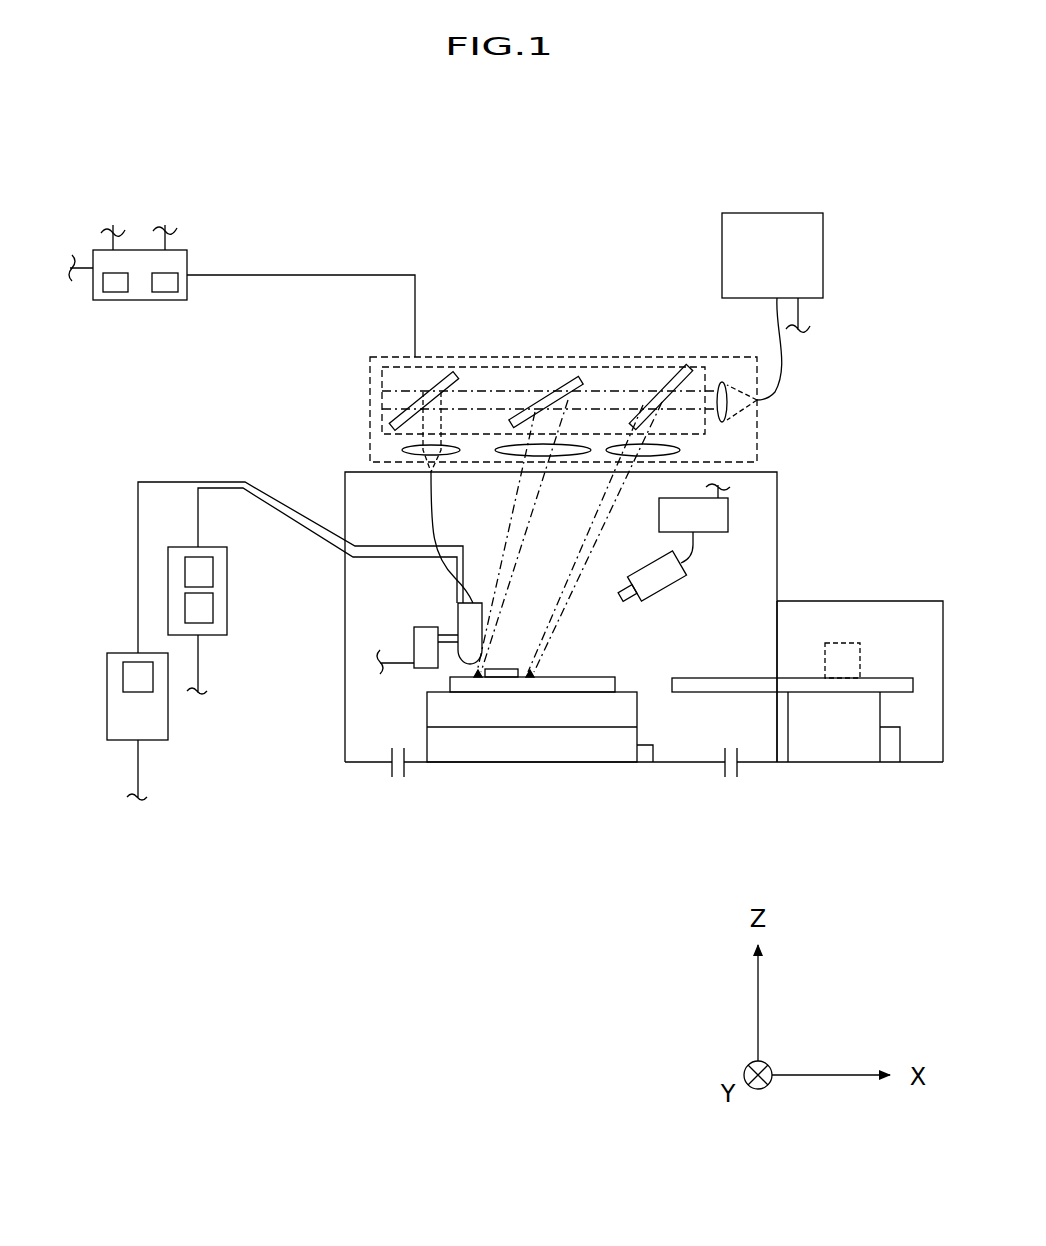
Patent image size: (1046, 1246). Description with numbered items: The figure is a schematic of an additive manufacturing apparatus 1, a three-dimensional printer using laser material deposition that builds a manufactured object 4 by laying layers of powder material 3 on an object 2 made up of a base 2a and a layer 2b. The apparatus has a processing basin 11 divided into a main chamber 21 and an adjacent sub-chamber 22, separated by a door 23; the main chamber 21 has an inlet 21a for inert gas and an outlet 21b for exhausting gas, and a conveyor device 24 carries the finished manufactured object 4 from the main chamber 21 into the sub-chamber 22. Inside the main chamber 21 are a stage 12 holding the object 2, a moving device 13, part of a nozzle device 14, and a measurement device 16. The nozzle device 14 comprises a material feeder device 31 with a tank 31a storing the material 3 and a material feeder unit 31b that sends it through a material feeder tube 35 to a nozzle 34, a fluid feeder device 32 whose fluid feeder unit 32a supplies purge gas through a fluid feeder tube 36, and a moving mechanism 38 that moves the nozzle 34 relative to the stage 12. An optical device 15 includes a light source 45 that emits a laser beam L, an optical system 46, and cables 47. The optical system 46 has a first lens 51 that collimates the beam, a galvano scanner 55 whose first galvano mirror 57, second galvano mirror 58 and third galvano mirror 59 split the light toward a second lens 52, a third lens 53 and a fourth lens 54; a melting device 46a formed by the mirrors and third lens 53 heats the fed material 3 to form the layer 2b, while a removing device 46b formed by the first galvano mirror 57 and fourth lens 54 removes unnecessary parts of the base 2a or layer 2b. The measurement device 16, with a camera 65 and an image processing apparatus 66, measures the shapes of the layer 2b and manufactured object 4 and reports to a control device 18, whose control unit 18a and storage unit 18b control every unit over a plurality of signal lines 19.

The additive manufacturing apparatus 1 is at (100, 158).
The object 2 is at (532, 749).
The base 2a is at (547, 692).
The layer 2b is at (507, 677).
The material 3 is at (209, 579).
The manufactured object 4 is at (857, 643).
The processing basin 11 is at (346, 764).
The stage 12 is at (358, 713).
The moving device 13 is at (471, 761).
The nozzle device 14 is at (283, 601).
The optical device 15 is at (802, 239).
The measurement device 16 is at (720, 544).
The control device 18 is at (242, 291).
The control unit 18a is at (116, 293).
The storage unit 18b is at (160, 293).
The signal lines 19 is at (73, 258).
The main chamber 21 is at (616, 643).
The inlet 21a is at (388, 770).
The outlet 21b is at (740, 770).
The sub-chamber 22 is at (807, 691).
The door 23 is at (779, 628).
The conveyor device 24 is at (748, 692).
The material feeder device 31 is at (224, 599).
The tank 31a is at (213, 562).
The material feeder unit 31b is at (213, 612).
The fluid feeder device 32 is at (153, 696).
The fluid feeder unit 32a is at (123, 668).
The nozzle 34 is at (458, 612).
The material feeder tube 35 is at (290, 522).
The fluid feeder tube 36 is at (138, 512).
The moving mechanism 38 is at (414, 640).
The light source 45 is at (823, 256).
The optical system 46 is at (563, 360).
The melting device 46a is at (533, 365).
The removing device 46b is at (646, 366).
The cables 47 is at (777, 378).
The first lens 51 is at (727, 383).
The second lens 52 is at (455, 447).
The third lens 53 is at (506, 447).
The fourth lens 54 is at (627, 445).
The galvano scanner 55 is at (400, 362).
The first galvano mirror 57 is at (640, 425).
The second galvano mirror 58 is at (534, 410).
The third galvano mirror 59 is at (428, 395).
The camera 65 is at (690, 577).
The image processing apparatus 66 is at (729, 516).
The laser beam L is at (528, 545).